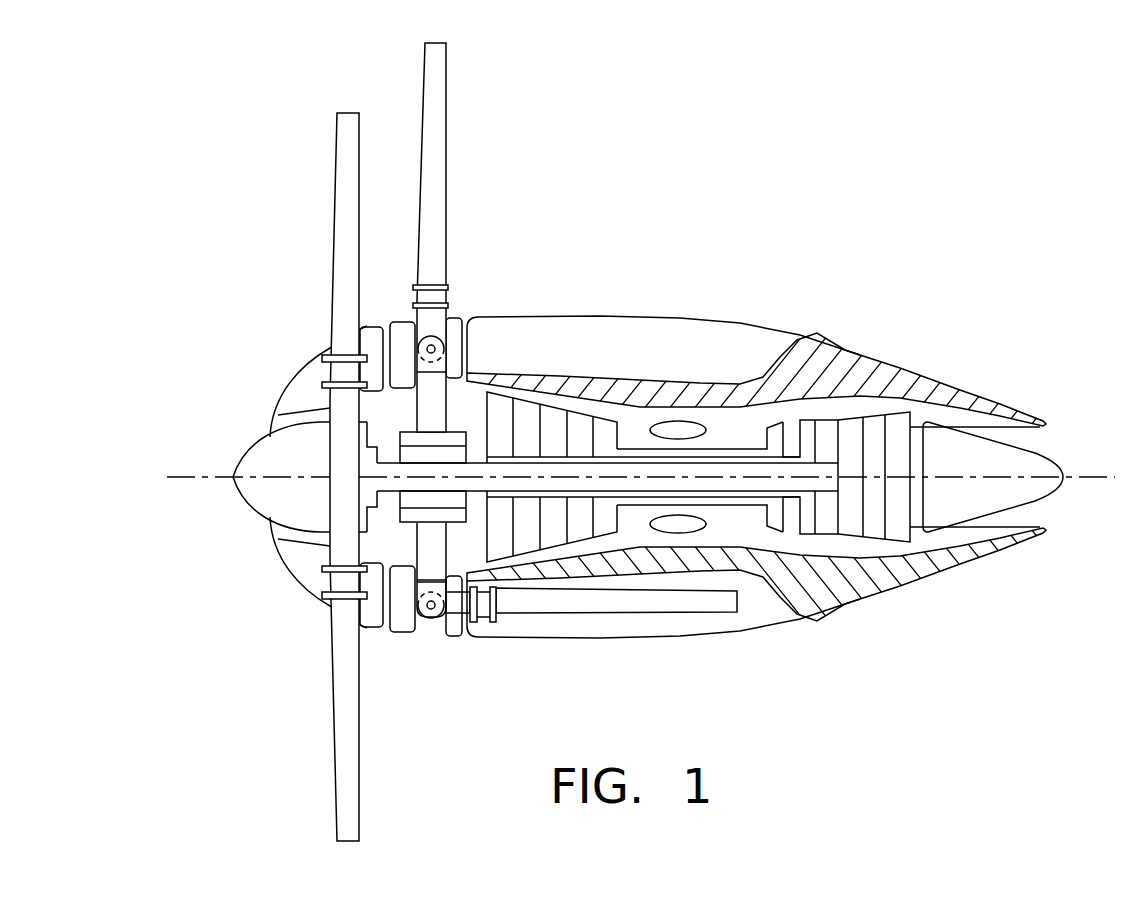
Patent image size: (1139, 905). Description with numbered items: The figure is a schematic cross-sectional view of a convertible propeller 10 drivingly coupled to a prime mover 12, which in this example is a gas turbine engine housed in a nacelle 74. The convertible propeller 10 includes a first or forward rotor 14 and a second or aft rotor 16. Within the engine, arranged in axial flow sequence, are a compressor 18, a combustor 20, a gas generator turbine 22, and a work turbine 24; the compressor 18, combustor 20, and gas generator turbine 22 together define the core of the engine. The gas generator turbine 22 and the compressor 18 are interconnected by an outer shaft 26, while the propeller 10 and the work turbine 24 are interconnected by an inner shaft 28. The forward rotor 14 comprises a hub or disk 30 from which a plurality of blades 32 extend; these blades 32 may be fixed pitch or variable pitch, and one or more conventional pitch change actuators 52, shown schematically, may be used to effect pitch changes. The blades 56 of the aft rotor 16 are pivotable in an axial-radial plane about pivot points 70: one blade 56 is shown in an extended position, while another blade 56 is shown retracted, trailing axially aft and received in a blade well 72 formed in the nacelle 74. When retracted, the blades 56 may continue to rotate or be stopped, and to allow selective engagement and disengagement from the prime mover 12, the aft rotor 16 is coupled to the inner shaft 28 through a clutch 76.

The convertible propeller 10 is at (218, 582).
The prime mover 12 is at (880, 335).
The forward rotor 14 is at (310, 382).
The aft rotor 16 is at (453, 322).
The compressor 18 is at (523, 410).
The combustor 20 is at (670, 420).
The gas generator turbine 22 is at (783, 433).
The work turbine 24 is at (895, 426).
The outer shaft 26 is at (743, 448).
The inner shaft 28 is at (792, 478).
The hub 30 is at (333, 459).
The blade 32 is at (348, 183).
The pitch change actuator 52 is at (345, 582).
The blade 56 is at (432, 118).
The pivot point 70 is at (422, 342).
The blade well 72 is at (715, 624).
The nacelle 74 is at (957, 567).
The clutch 76 is at (455, 435).